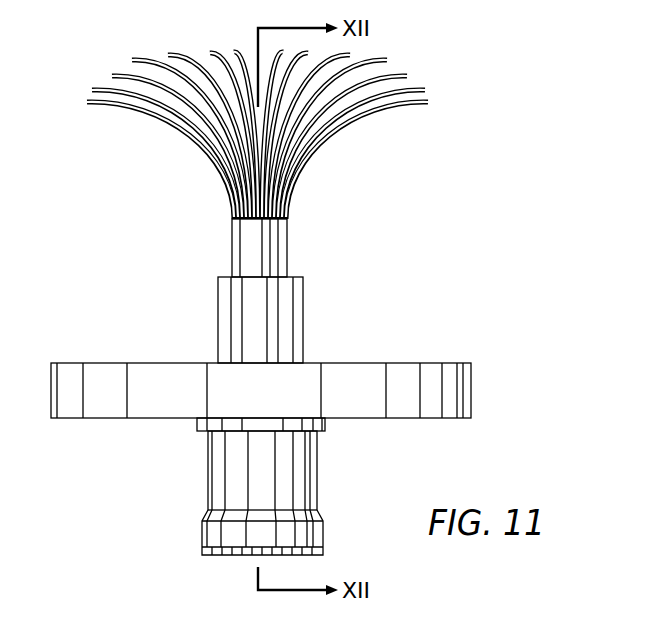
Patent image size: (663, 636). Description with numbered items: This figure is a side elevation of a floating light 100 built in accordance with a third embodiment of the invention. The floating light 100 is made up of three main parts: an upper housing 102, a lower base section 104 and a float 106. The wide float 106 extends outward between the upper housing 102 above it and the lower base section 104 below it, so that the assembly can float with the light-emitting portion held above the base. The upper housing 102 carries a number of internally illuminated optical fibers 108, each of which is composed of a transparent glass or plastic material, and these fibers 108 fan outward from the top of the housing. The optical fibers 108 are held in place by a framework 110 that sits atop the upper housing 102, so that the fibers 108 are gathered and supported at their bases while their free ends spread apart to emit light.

The floating light 100 is at (188, 206).
The upper housing 102 is at (303, 302).
The lower base section 104 is at (318, 473).
The float 106 is at (410, 362).
The optical fibers 108 is at (360, 117).
The framework 110 is at (289, 244).